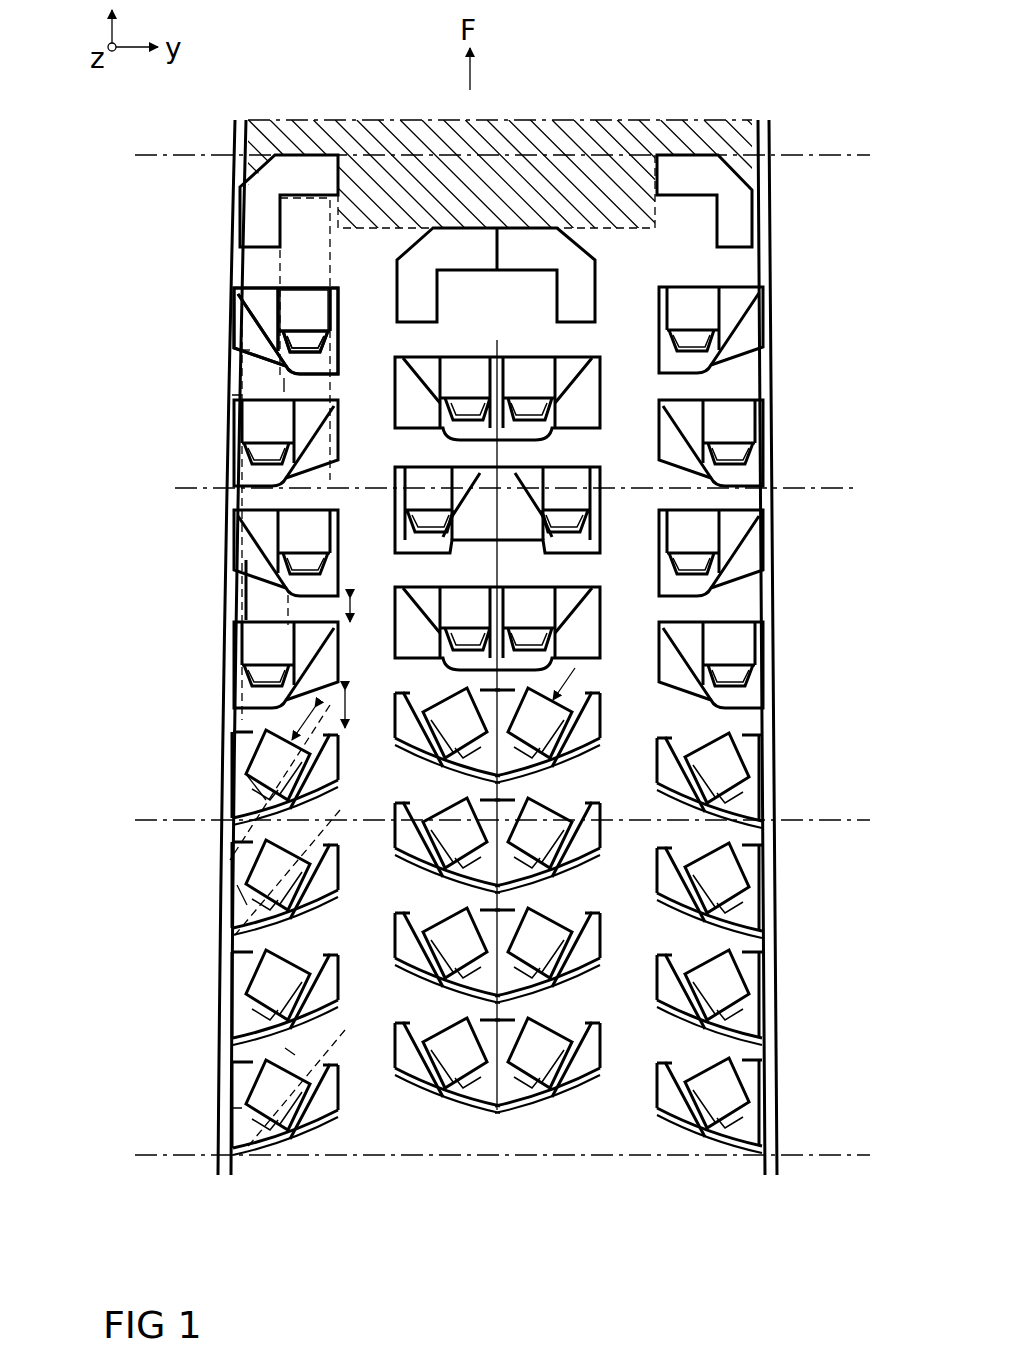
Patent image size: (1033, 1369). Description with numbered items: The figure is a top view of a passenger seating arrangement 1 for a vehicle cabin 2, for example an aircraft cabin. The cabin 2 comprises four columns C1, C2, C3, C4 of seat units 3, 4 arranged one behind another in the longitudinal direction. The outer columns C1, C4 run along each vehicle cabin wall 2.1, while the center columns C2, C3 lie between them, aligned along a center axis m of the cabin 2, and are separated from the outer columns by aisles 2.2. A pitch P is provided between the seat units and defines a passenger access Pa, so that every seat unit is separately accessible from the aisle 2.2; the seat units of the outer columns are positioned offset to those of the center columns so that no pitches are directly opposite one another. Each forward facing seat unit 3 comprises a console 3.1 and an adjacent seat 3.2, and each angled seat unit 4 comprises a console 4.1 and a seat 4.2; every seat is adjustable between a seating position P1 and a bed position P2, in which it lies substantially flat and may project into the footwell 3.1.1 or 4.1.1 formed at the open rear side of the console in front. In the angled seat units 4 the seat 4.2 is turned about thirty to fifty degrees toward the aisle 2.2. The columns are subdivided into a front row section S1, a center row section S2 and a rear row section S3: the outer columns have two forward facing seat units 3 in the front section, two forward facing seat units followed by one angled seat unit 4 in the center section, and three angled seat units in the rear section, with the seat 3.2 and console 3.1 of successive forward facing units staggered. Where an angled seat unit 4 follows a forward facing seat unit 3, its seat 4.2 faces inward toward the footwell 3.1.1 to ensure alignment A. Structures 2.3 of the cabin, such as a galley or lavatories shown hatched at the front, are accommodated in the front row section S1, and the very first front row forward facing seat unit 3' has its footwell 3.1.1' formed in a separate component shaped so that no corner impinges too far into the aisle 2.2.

The passenger seating arrangement 1 is at (782, 940).
The vehicle cabin 2 is at (778, 590).
The vehicle cabin wall 2.1 is at (255, 735).
The aisle 2.2 is at (370, 240).
The structures of the cabin 2.3 is at (740, 130).
The forward facing seat unit 3 is at (482, 497).
The very first front row forward facing seat unit 3' is at (483, 366).
The console 3.1 is at (250, 315).
The footwell 3.1.1 is at (185, 371).
The footwell for the very first front row forward facing seat unit 3.1.1' is at (356, 194).
The seat 3.2 is at (300, 300).
The angled seat unit 4 is at (230, 805).
The console 4.1 is at (330, 760).
The seat 4.2 is at (280, 770).
The footwell 4.1.1 is at (245, 905).
The center axis m is at (505, 567).
The pitch P is at (351, 663).
The passenger access Pa is at (320, 605).
The seating position P1 is at (245, 420).
The bed position P2 is at (285, 385).
The alignment A is at (439, 701).
The front row section S1 is at (61, 341).
The center row section S2 is at (61, 641).
The rear row section S3 is at (51, 991).
The column C1 is at (710, 1180).
The column C2 is at (555, 1180).
The column C3 is at (462, 1180).
The column C4 is at (285, 1180).